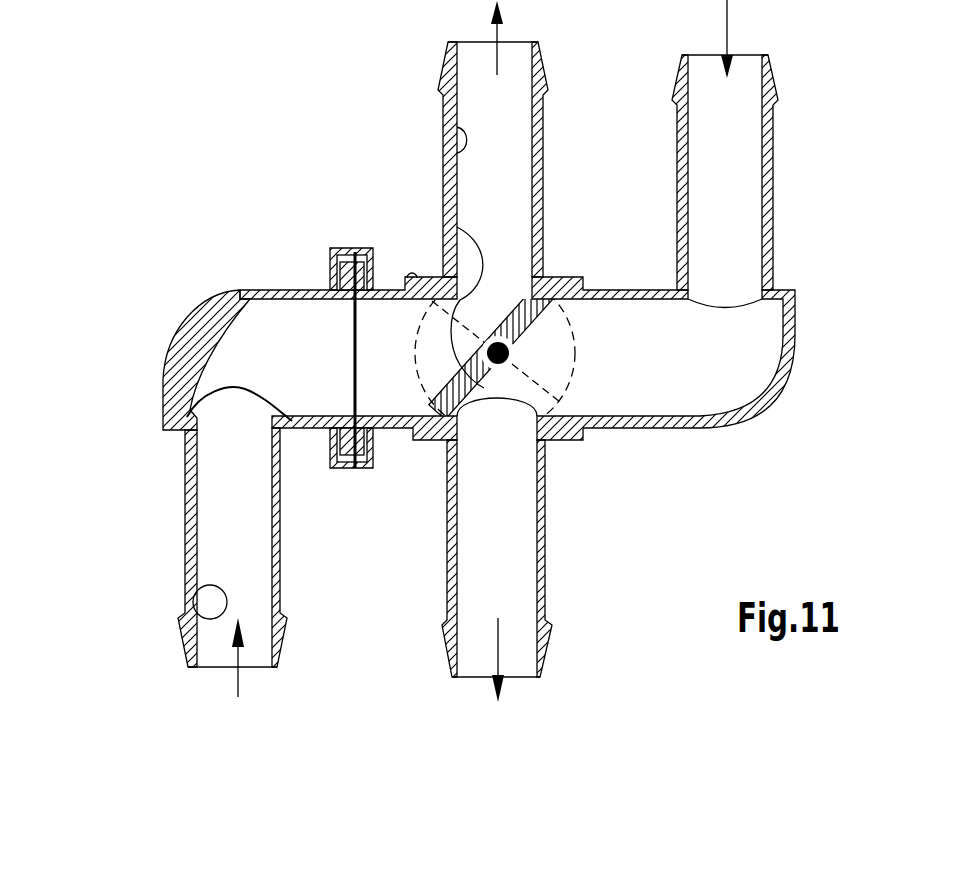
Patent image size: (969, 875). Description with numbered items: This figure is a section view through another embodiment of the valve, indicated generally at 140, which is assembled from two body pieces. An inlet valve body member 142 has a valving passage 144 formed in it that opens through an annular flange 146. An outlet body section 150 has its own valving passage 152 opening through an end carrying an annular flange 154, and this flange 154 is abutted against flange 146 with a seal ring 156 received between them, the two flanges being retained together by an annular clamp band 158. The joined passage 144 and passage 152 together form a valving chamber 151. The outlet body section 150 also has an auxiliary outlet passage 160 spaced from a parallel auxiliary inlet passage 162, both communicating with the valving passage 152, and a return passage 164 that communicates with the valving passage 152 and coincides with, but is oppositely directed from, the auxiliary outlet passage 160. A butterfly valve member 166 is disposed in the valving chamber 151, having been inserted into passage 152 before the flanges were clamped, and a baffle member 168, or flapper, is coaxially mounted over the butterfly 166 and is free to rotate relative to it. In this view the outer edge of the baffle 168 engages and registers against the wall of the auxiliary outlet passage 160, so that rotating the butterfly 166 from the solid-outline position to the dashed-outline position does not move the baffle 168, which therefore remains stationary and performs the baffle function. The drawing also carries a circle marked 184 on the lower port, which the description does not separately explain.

The valve 140 is at (238, 155).
The inlet valve body member 142 is at (233, 290).
The valving passage 144 is at (163, 387).
The annular flange 146 is at (332, 272).
The outlet body section 150 is at (672, 422).
The valving chamber 151 is at (375, 380).
The valving passage 152 is at (592, 410).
The annular flange 154 is at (373, 440).
The seal ring 156 is at (352, 433).
The annular clamp band 158 is at (360, 250).
The auxiliary outlet passage 160 is at (446, 120).
The auxiliary inlet passage 162 is at (688, 190).
The return passage 164 is at (457, 555).
The butterfly valve member 166 is at (453, 229).
The baffle member 168 is at (515, 297).
The inlet port 184 is at (193, 604).